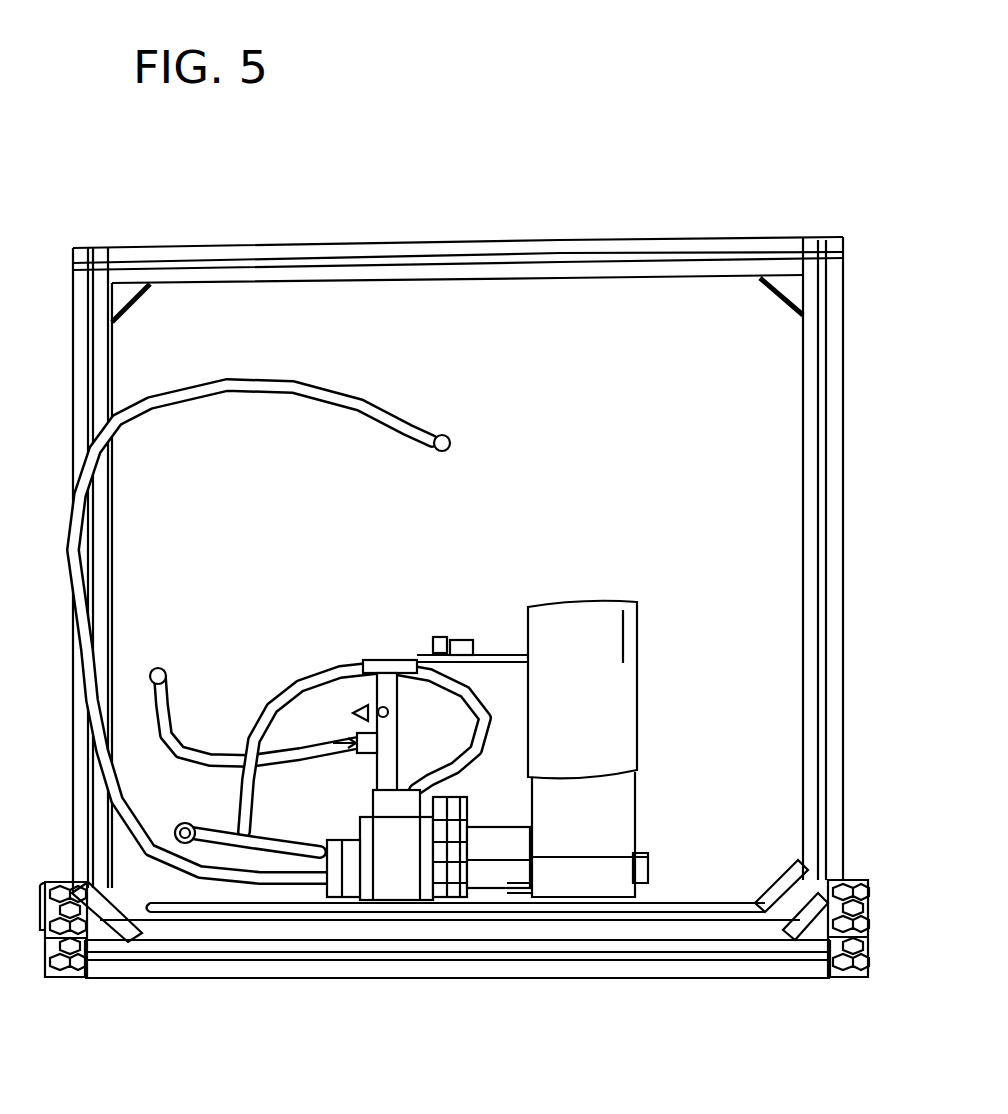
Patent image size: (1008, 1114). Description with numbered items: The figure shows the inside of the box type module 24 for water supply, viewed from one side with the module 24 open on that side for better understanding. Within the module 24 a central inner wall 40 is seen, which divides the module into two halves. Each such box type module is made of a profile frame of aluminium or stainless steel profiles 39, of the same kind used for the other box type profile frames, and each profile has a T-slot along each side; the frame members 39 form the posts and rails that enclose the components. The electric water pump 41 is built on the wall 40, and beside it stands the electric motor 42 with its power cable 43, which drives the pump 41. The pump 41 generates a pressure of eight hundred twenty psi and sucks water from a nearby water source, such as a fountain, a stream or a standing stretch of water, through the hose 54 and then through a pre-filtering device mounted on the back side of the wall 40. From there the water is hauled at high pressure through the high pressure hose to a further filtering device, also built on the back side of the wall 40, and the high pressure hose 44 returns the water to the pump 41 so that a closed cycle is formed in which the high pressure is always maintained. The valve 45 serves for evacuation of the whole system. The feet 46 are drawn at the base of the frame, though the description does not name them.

The module 24 is at (545, 360).
The central inner wall 40 is at (665, 467).
The aluminium or stainless steel profiles 39 is at (845, 808).
The rubber foot 46 is at (813, 923).
The electric water pump 41 is at (393, 873).
The electric motor 42 is at (587, 823).
The power cable 43 is at (377, 405).
The high pressure hose 44 is at (167, 720).
The valve 45 is at (390, 711).
The hose 54 is at (213, 830).